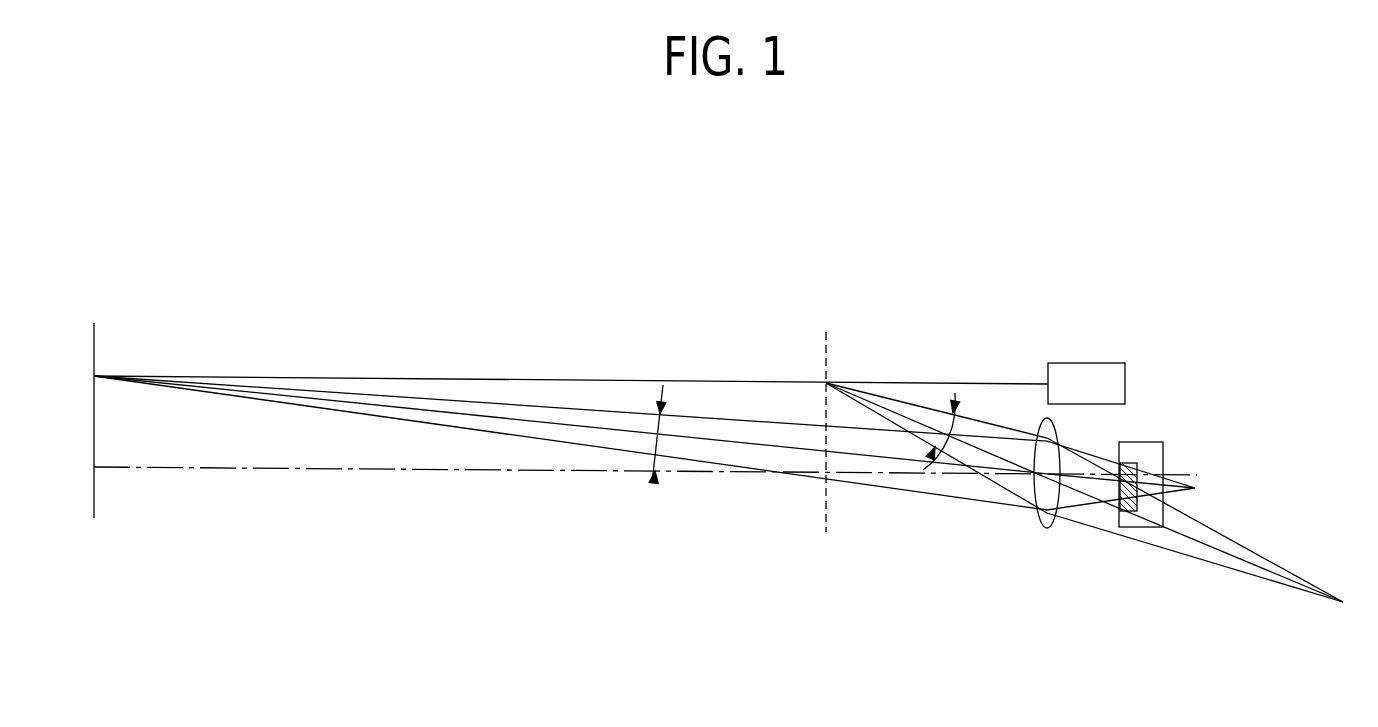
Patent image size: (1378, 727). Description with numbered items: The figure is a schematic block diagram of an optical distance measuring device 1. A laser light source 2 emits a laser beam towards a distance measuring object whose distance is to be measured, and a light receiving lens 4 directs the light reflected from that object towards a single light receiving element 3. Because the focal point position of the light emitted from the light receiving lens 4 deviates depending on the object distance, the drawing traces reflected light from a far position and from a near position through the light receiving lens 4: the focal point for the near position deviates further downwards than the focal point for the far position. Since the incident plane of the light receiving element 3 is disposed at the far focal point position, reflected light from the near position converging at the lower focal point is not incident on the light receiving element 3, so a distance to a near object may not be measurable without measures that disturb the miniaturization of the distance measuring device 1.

The distance measuring device 1 is at (1223, 350).
The laser light source 2 is at (1085, 368).
The light receiving element 3 is at (1130, 527).
The light receiving lens 4 is at (1046, 530).